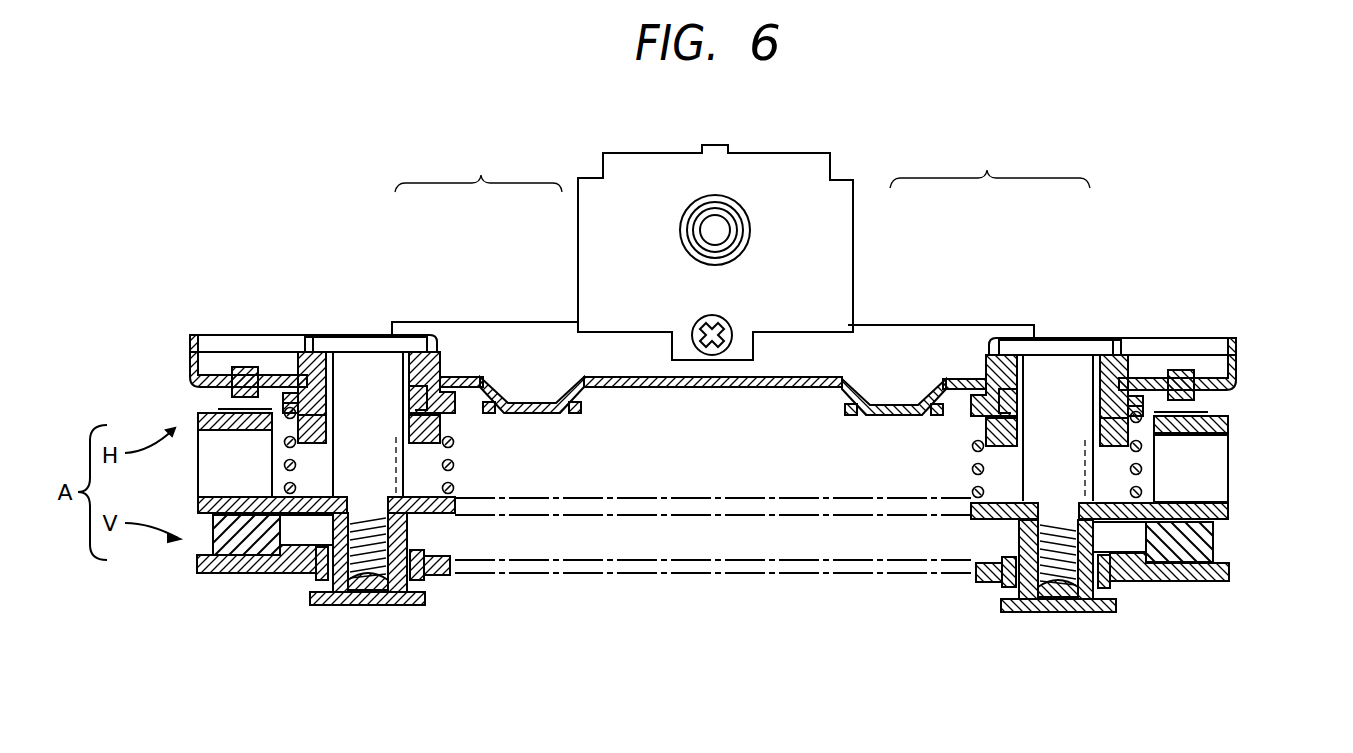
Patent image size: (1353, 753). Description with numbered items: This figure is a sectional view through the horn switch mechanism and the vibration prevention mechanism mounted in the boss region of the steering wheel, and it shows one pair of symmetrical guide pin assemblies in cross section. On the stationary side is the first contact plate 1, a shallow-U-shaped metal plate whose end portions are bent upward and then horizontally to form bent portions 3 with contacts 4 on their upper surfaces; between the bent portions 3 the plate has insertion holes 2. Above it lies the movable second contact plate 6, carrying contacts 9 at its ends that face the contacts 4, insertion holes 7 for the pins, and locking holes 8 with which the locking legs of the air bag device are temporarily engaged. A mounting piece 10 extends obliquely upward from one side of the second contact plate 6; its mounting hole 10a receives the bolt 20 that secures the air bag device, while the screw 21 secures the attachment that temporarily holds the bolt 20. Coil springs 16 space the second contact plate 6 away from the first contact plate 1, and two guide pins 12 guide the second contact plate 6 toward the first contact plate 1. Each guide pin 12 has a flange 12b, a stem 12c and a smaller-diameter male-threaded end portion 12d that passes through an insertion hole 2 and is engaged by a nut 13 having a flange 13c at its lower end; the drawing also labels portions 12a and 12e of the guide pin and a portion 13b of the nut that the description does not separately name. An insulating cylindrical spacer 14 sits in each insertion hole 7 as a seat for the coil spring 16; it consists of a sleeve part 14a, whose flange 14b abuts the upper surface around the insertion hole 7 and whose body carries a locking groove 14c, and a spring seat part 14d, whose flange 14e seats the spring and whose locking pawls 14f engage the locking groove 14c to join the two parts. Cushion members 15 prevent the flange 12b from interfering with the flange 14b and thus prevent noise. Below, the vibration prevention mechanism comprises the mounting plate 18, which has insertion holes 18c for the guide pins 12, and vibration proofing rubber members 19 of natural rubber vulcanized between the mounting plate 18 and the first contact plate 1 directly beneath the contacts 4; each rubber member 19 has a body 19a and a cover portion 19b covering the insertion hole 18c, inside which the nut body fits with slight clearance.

The first contact plate 1 is at (450, 503).
The insertion holes 2 is at (348, 497).
The bent portions 3 is at (205, 481).
The contacts 4 is at (208, 412).
The second contact plate 6 is at (707, 387).
The insertion holes 7 is at (408, 372).
The locking holes 8 is at (540, 397).
The contacts 9 is at (192, 340).
The mounting piece 10 is at (840, 254).
The mounting hole 10a is at (735, 206).
The guide pins 12 is at (347, 335).
The screw flange 12a is at (713, 338).
The flange 12b is at (713, 556).
The stem 12c is at (450, 453).
The male-threaded end portion 12d is at (362, 575).
The screw spring 12e is at (440, 537).
The nuts 13 is at (320, 600).
The nut collar 13b is at (400, 588).
The flange 13c is at (713, 602).
The insulating cylindrical spacers 14 is at (481, 175).
The sleeve part 14a is at (425, 370).
The flange 14b is at (713, 430).
The locking groove 14c is at (400, 425).
The spring seat part 14d is at (465, 378).
The flange 14e is at (713, 430).
The locking pawls 14f is at (300, 395).
The cushion members 15 is at (278, 430).
The coil springs 16 is at (285, 465).
The mounting plate 18 is at (290, 573).
The insertion holes 18c is at (297, 572).
The vibration proofing rubber members 19 is at (1195, 540).
The body 19a is at (218, 565).
The cover portion 19b is at (1123, 587).
The bolt 20 is at (717, 228).
The screw 21 is at (717, 318).